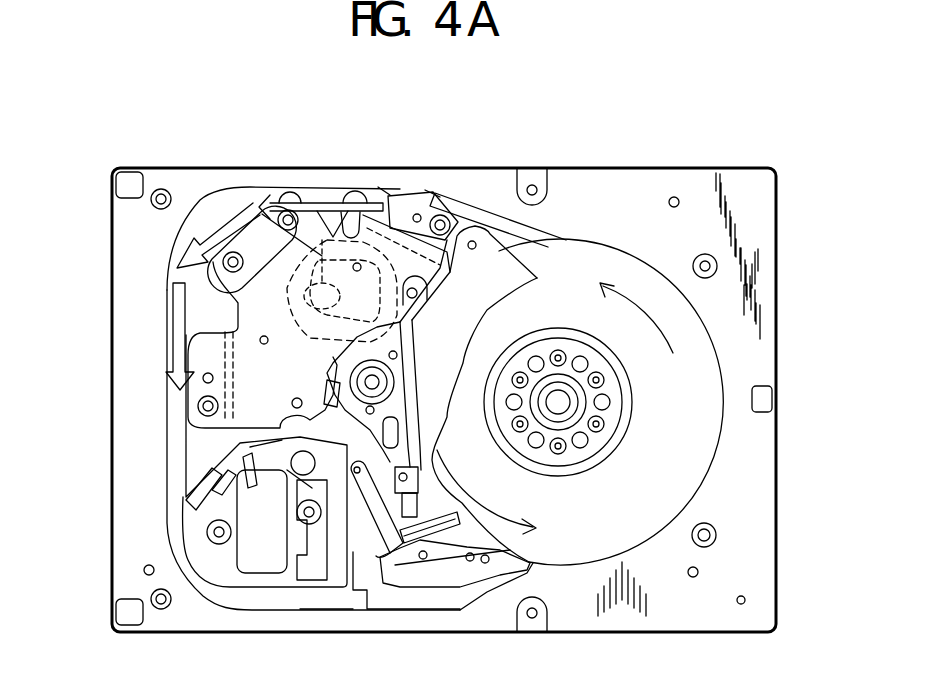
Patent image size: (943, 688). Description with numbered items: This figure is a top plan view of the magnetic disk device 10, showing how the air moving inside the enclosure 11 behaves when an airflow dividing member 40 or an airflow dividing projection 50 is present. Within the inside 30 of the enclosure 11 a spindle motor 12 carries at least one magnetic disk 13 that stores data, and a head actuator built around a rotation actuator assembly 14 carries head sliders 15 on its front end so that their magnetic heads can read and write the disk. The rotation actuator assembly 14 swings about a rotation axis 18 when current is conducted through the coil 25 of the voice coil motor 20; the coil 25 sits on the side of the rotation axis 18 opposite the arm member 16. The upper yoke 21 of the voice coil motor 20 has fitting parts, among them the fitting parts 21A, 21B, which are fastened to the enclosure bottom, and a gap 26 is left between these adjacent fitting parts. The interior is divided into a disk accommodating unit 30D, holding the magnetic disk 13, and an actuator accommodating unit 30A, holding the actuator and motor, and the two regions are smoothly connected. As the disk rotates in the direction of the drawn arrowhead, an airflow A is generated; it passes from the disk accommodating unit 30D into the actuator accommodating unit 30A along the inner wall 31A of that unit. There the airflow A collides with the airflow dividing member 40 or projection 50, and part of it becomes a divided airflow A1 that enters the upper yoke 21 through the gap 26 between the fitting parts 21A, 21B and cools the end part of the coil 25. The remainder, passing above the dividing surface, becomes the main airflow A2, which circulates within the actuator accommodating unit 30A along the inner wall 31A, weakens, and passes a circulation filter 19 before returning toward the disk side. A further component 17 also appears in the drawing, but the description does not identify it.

The magnetic disk device 10 is at (607, 148).
The enclosure 11 is at (762, 309).
The spindle motor 12 is at (598, 408).
The magnetic disk 13 is at (687, 466).
The rotation actuator assembly 14 is at (410, 418).
The head slider 15 is at (436, 523).
The arm member 16 is at (413, 470).
The flexible printed circuit 17 is at (415, 485).
The rotation axis 18 is at (382, 382).
The circulation filter 19 is at (468, 578).
The voice coil motor 20 is at (437, 195).
The upper yoke 21 is at (257, 384).
The fitting part 21A is at (400, 205).
The fitting part 21B is at (313, 210).
The coil 25 is at (290, 312).
The gap 26 is at (333, 190).
The inside of the enclosure 30 is at (197, 212).
The actuator accommodating unit 30A is at (183, 453).
The disk accommodating unit 30D is at (553, 240).
The inner wall of the actuator accommodating unit 31A is at (427, 190).
The airflow dividing member 40 is at (328, 162).
The airflow dividing projection 50 is at (320, 197).
The airflow A is at (380, 190).
The divided airflow A1 is at (368, 278).
The main airflow A2 is at (268, 205).